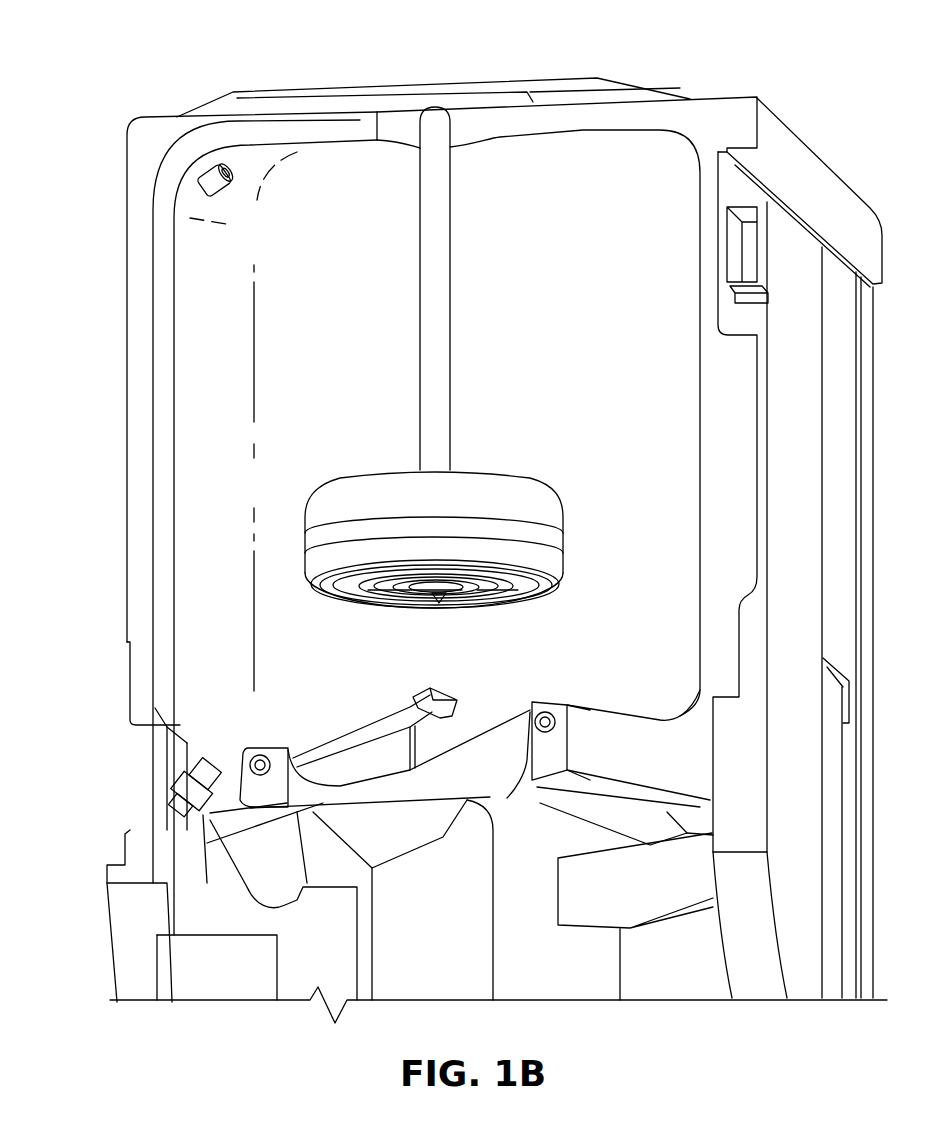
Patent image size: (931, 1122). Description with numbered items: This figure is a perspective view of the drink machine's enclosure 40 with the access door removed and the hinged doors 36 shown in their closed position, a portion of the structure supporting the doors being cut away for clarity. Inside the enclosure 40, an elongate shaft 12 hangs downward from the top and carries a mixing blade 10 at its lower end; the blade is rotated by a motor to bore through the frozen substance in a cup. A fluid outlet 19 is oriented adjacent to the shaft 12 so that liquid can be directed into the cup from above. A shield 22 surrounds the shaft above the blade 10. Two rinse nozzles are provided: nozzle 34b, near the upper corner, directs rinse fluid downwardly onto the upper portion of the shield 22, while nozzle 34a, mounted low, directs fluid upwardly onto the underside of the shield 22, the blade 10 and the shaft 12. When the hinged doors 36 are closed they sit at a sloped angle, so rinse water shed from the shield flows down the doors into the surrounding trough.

The mixing blade 10 is at (495, 600).
The elongate shaft 12 is at (443, 410).
The fluid outlet 19 is at (490, 103).
The shield 22 is at (550, 517).
The nozzle 34a is at (197, 767).
The nozzle 34b is at (207, 175).
The hinged doors 36 is at (400, 712).
The enclosure 40 is at (718, 117).